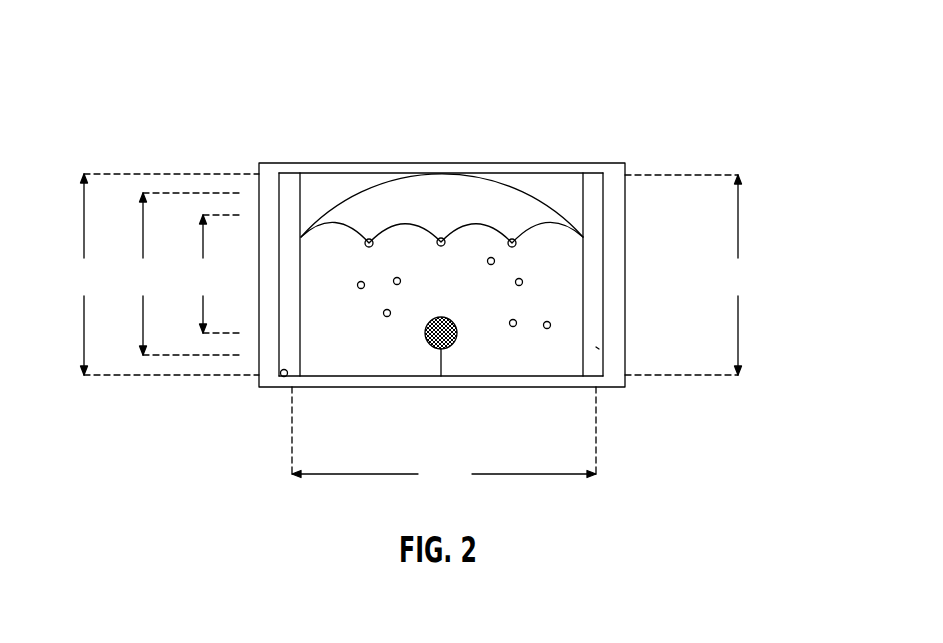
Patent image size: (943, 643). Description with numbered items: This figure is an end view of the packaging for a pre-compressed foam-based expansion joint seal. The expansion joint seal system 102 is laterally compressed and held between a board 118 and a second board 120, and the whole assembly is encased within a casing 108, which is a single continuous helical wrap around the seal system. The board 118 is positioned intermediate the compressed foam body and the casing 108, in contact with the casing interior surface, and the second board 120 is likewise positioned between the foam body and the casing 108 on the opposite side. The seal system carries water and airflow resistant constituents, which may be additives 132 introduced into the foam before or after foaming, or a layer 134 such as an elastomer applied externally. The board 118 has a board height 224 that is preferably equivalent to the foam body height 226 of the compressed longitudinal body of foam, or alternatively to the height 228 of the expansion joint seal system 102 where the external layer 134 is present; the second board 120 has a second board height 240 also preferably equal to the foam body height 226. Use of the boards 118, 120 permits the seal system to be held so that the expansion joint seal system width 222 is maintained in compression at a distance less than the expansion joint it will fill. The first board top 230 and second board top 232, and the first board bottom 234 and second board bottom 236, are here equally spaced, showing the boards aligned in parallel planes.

The expansion joint seal system 102 is at (342, 365).
The casing 108 is at (532, 382).
The board 118 is at (291, 378).
The second board 120 is at (597, 367).
The additives 132 is at (551, 322).
The layer 134 is at (455, 180).
The expansion joint seal system width 222 is at (444, 438).
The board height 224 is at (162, 274).
The foam body height 226 is at (212, 274).
The height of the expansion joint seal system 228 is at (182, 274).
The first board top 230 is at (286, 181).
The second board top 232 is at (594, 182).
The first board bottom 234 is at (265, 372).
The second board bottom 236 is at (598, 347).
The second board height 240 is at (691, 275).